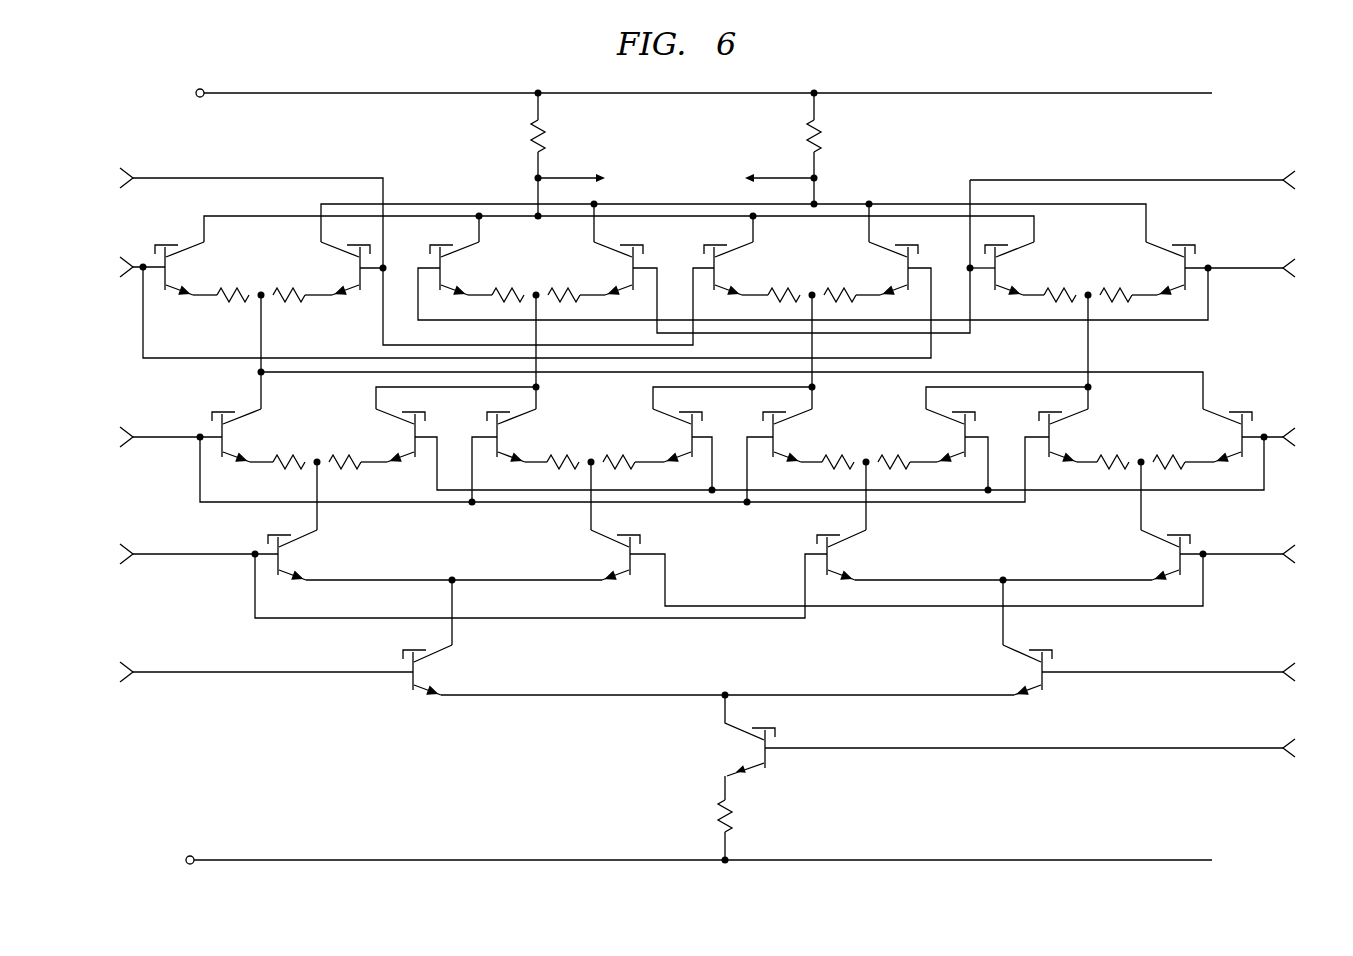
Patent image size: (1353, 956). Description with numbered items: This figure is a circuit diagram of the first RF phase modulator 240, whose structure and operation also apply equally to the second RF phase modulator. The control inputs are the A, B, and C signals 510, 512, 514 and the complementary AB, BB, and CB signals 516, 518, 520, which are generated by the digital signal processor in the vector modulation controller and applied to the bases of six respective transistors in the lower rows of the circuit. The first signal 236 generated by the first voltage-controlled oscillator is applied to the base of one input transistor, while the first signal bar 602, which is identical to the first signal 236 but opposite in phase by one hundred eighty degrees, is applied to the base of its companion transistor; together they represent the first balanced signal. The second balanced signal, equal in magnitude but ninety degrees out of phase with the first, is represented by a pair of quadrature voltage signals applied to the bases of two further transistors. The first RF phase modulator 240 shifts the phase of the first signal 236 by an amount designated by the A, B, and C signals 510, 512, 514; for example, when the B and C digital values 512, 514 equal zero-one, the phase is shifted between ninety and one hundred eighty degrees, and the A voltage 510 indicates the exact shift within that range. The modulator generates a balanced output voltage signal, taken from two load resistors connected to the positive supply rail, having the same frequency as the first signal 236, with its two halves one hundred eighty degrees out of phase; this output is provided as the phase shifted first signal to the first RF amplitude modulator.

The first RF phase modulator 240 is at (126, 104).
The first signal bar 602 is at (158, 178).
The first signal 236 is at (141, 266).
The A signal 510 is at (148, 435).
The B signal 512 is at (148, 551).
The C signal 514 is at (148, 669).
The AB signal 516 is at (1268, 434).
The BB signal 518 is at (1266, 552).
The CB signal 520 is at (1266, 670).